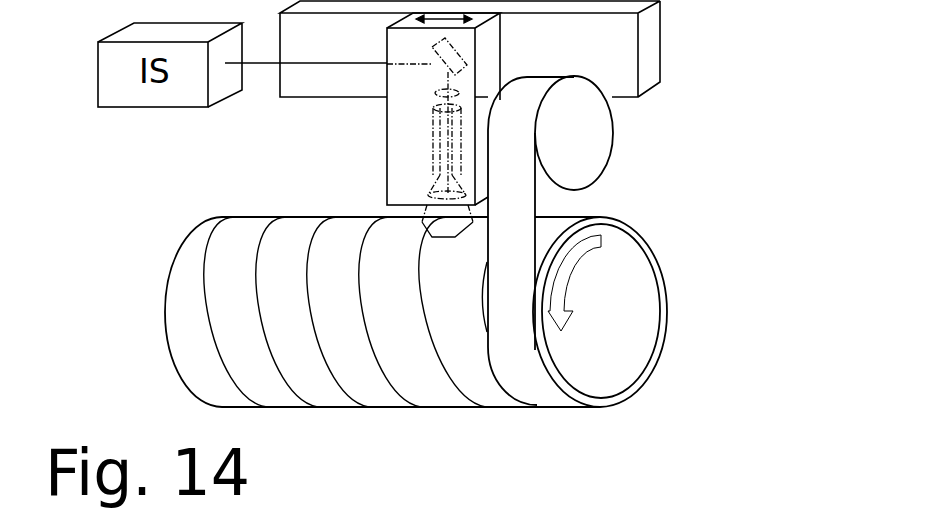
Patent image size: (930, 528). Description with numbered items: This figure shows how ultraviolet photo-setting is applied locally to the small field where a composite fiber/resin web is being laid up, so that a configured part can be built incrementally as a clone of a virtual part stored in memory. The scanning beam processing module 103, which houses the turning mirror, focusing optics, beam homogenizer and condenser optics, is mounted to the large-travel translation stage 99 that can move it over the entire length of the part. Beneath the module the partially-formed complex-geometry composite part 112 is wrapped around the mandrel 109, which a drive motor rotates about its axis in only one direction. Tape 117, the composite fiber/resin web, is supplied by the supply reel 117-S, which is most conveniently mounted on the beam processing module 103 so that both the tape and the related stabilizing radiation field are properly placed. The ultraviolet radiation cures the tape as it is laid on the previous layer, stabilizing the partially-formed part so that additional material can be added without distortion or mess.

The large-travel translation stage 99 is at (653, 42).
The scanning beam processing module 103 is at (387, 131).
The mandrel 109 is at (635, 287).
The partially-formed complex-geometry composite part 112 is at (405, 408).
The tape 117 is at (537, 205).
The supply reel 117-S is at (613, 147).